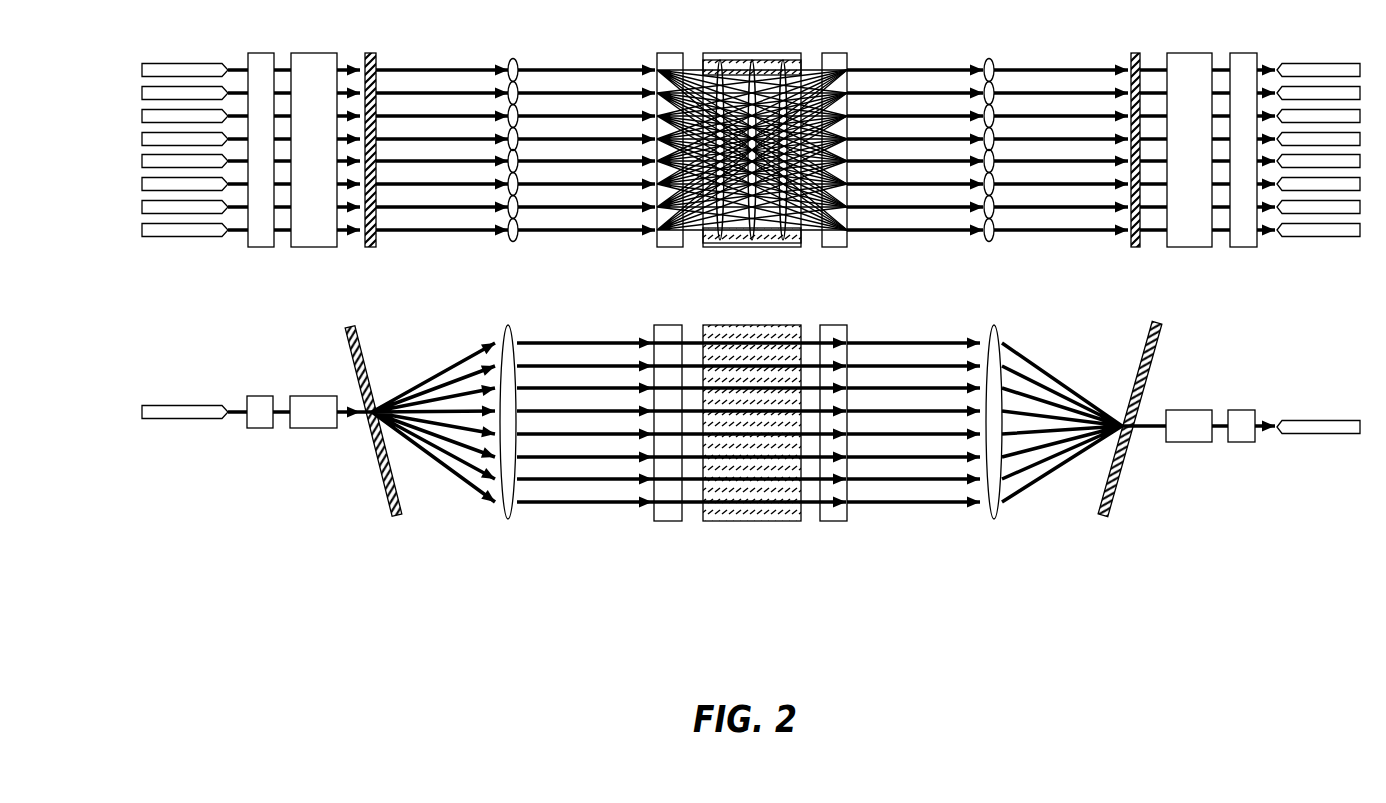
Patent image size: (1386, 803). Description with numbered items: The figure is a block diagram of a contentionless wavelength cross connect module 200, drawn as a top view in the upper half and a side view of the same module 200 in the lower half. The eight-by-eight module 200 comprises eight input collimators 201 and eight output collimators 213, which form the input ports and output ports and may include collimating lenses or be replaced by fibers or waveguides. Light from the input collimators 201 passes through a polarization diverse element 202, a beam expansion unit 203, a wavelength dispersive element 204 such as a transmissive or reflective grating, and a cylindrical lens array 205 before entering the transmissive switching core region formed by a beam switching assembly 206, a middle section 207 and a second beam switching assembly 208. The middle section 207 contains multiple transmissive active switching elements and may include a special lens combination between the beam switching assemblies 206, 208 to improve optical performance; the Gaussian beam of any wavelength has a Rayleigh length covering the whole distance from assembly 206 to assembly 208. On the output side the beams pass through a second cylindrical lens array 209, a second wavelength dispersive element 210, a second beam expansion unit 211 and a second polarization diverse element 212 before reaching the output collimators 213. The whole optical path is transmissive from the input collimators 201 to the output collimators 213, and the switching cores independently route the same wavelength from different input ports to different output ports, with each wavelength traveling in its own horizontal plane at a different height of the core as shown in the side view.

The contentionless WXC module 200 is at (751, 290).
The input collimators 201 is at (200, 237).
The polarization diverse element 202 is at (262, 237).
The beam expansion unit 203 is at (320, 237).
The wavelength dispersive element 204 is at (377, 217).
The cylindrical lens array 205 is at (513, 197).
The beam switching assembly 206 is at (672, 287).
The middle section 207 is at (752, 287).
The beam switching assembly 208 is at (843, 287).
The cylindrical lens array 209 is at (993, 212).
The wavelength dispersive element 210 is at (1130, 285).
The beam expansion unit 211 is at (1200, 240).
The polarization diverse element 212 is at (1243, 237).
The output collimators 213 is at (1342, 230).